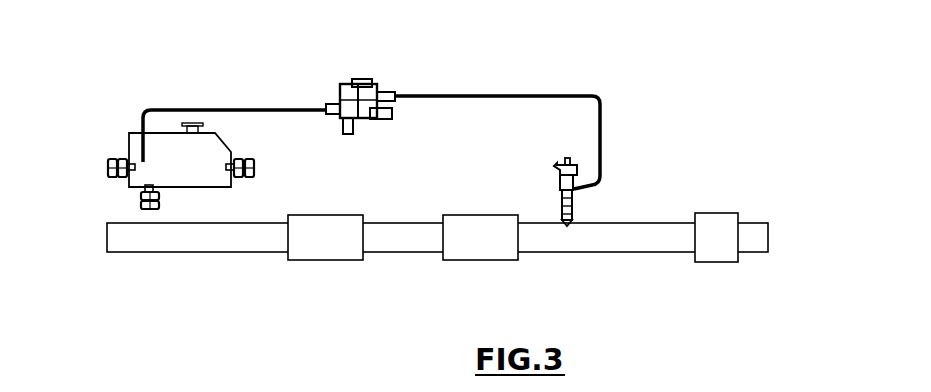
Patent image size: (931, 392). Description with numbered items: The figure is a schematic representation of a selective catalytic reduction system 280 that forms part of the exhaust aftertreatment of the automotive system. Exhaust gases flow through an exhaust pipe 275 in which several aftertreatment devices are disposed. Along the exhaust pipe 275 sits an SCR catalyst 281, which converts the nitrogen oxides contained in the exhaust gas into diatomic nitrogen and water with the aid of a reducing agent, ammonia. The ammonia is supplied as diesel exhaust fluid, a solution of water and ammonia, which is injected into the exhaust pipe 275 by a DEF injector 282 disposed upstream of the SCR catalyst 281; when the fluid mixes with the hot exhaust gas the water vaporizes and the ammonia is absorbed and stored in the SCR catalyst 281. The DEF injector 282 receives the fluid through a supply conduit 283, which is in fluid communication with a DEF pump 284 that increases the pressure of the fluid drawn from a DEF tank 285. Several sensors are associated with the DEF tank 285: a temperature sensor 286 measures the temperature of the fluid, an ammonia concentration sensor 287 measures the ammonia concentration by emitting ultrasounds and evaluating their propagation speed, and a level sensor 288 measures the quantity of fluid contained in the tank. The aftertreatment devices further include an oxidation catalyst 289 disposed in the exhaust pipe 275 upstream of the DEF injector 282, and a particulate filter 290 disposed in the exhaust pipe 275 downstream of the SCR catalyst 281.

The exhaust pipe 275 is at (217, 238).
The selective catalytic reduction (SCR) system 280 is at (214, 77).
The SCR catalyst 281 is at (478, 243).
The DEF injector 282 is at (572, 190).
The supply conduit 283 is at (578, 92).
The DEF pump 284 is at (352, 82).
The DEF tank 285 is at (171, 142).
The temperature sensor 286 is at (140, 197).
The ammonia concentration sensor 287 is at (108, 161).
The level sensor 288 is at (255, 168).
The oxidation catalyst 289 is at (717, 248).
The particulate filter 290 is at (315, 240).